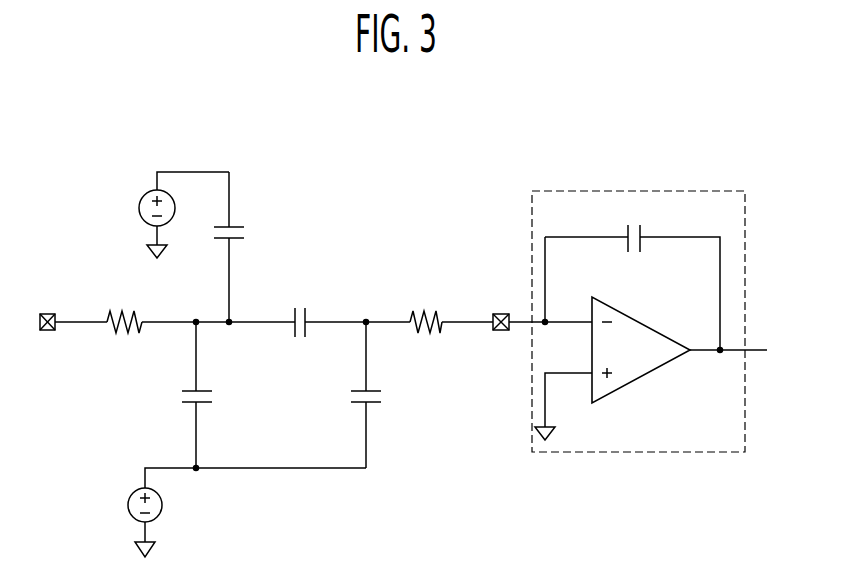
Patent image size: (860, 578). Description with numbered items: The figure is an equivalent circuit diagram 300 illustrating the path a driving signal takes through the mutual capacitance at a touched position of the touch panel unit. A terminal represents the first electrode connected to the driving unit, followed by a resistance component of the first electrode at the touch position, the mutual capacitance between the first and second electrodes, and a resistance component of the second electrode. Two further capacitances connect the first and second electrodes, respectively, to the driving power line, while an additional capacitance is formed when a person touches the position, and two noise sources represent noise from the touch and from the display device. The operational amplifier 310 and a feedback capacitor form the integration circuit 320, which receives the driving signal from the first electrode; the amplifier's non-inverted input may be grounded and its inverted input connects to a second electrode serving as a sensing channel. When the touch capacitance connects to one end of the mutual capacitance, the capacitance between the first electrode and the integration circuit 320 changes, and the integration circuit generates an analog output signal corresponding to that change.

The equivalent circuit diagram 300 is at (488, 127).
The operational amplifier 310 is at (640, 377).
The integration circuit 320 is at (672, 191).